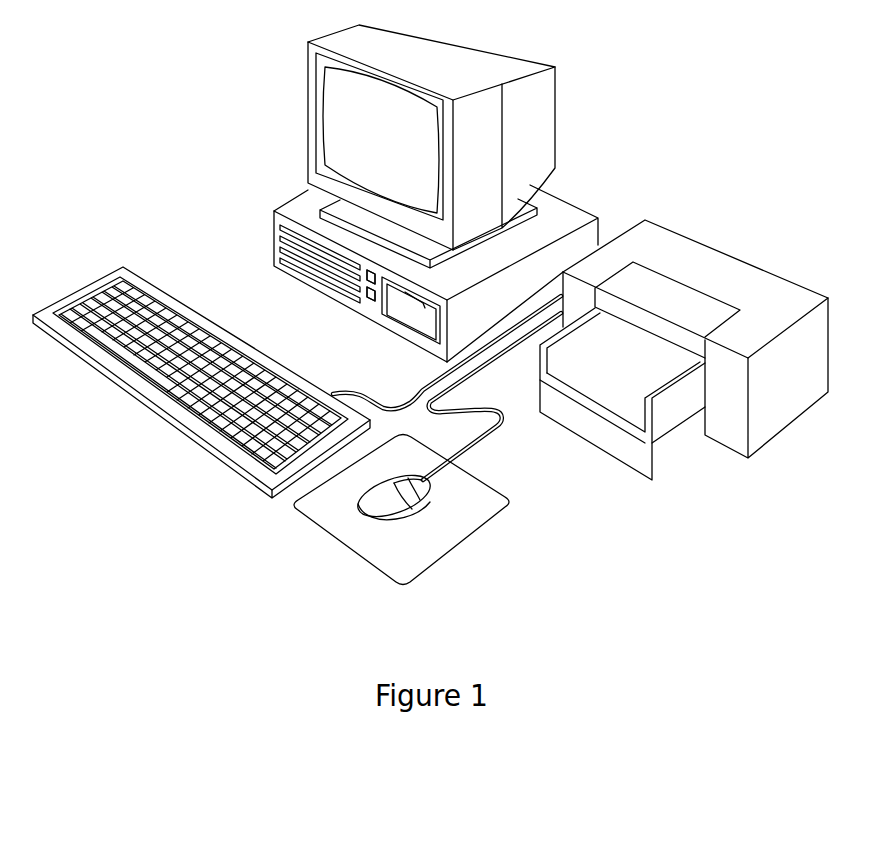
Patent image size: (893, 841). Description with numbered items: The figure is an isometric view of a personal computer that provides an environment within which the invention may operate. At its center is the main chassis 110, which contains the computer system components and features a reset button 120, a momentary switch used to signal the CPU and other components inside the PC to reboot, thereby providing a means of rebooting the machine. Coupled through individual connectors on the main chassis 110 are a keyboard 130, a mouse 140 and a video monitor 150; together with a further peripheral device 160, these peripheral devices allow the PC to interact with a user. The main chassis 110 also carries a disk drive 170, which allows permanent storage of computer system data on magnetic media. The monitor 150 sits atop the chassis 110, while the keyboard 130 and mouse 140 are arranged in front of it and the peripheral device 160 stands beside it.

The main chassis 110 is at (395, 273).
The reset button 120 is at (370, 302).
The keyboard 130 is at (162, 290).
The mouse 140 is at (420, 504).
The video monitor 150 is at (307, 114).
The peripheral device 160 is at (602, 452).
The disk drive 170 is at (413, 328).